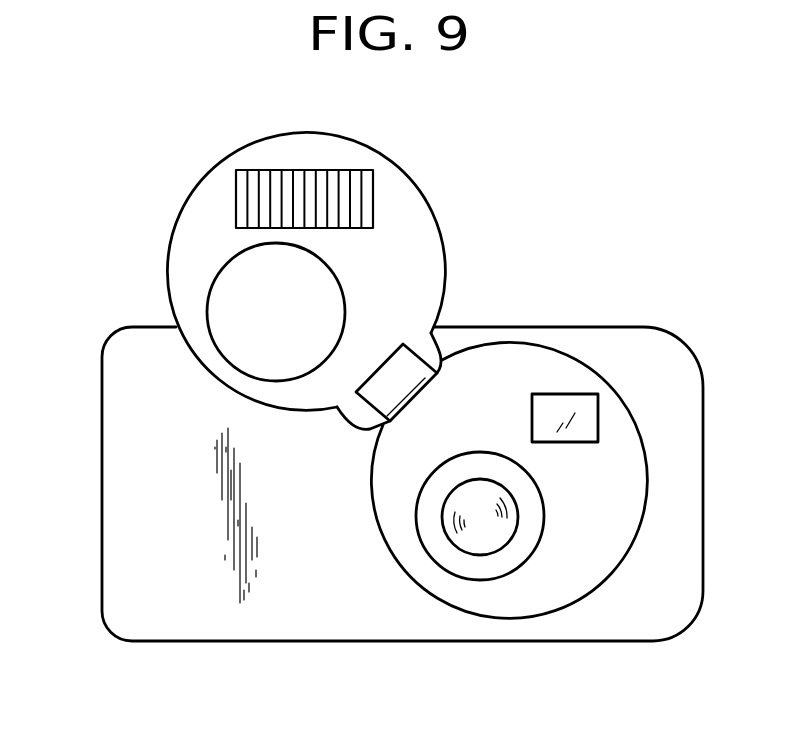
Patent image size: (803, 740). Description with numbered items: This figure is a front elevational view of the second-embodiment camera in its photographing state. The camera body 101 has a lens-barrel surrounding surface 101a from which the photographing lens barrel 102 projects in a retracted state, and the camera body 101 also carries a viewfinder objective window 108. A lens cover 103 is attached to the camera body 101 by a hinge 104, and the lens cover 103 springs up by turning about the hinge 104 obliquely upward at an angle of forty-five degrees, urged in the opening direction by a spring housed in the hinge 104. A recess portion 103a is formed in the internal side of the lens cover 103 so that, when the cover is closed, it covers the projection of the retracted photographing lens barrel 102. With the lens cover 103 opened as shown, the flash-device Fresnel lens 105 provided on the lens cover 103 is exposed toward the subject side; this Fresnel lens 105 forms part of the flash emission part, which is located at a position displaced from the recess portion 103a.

The camera body 101 is at (173, 607).
The lens-barrel surrounding surface 101a is at (585, 583).
The photographing lens barrel 102 is at (470, 563).
The lens cover 103 is at (408, 262).
The recess portion 103a is at (233, 302).
The hinge 104 is at (413, 388).
The flash-device Fresnel lens 105 is at (360, 198).
The viewfinder objective window 108 is at (565, 407).